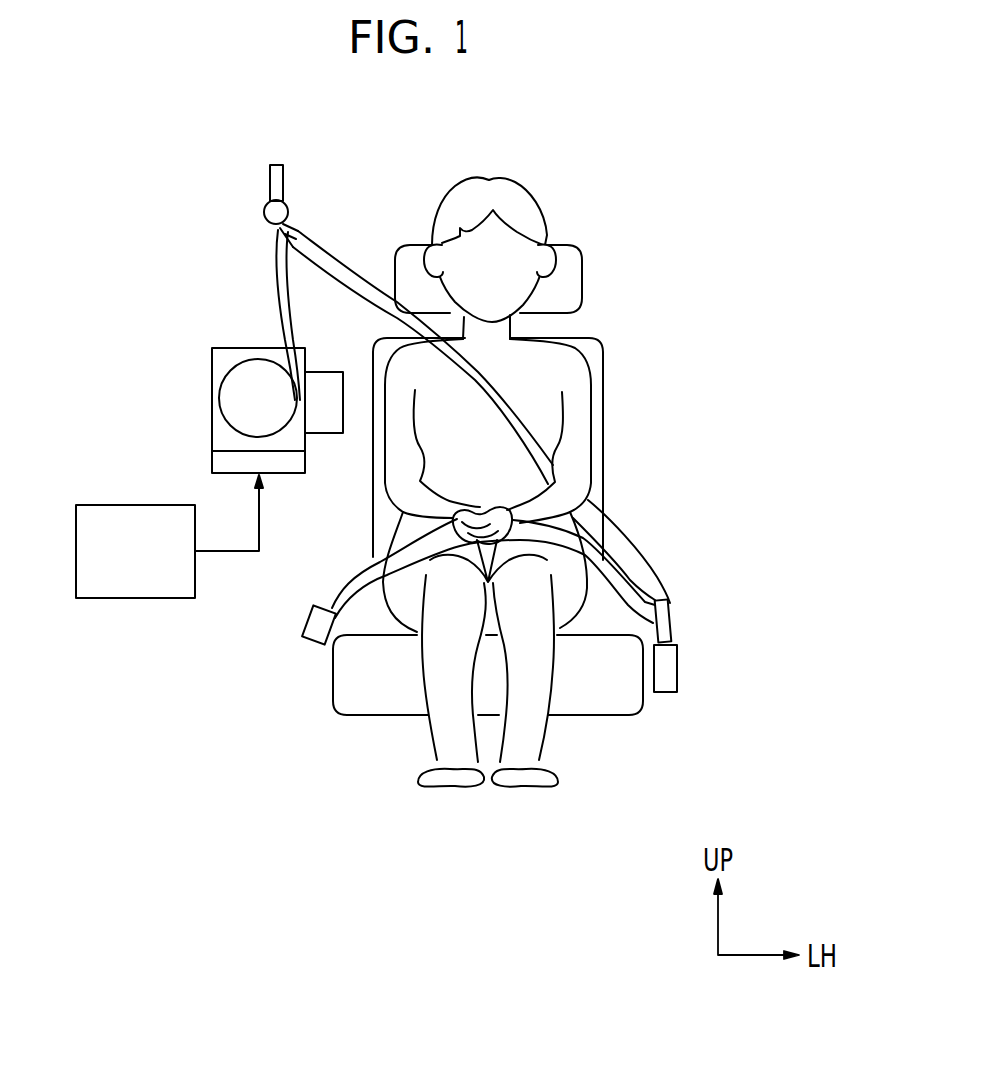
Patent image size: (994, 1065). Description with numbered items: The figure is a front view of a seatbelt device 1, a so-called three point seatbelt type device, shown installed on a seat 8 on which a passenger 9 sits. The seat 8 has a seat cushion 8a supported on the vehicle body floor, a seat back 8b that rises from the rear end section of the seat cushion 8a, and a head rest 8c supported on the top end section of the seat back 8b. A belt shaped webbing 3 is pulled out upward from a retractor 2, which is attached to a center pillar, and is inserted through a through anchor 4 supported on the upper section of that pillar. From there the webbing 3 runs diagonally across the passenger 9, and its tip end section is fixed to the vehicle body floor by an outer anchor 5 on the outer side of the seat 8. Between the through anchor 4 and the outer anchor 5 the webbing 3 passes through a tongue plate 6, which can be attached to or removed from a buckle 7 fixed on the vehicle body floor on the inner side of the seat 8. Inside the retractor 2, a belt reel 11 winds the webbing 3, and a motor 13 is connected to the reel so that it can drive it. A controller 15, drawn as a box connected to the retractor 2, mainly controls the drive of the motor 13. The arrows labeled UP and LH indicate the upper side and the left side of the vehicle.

The seatbelt device 1 is at (422, 425).
The retractor 2 is at (224, 412).
The webbing 3 is at (327, 240).
The through anchor 4 is at (287, 228).
The outer anchor 5 is at (318, 622).
The tongue plate 6 is at (668, 633).
The buckle 7 is at (667, 670).
The seat 8 is at (522, 528).
The seat cushion 8a is at (602, 695).
The seat back 8b is at (598, 442).
The head rest 8c is at (582, 273).
The passenger 9 is at (537, 192).
The belt reel 11 is at (240, 405).
The motor 13 is at (288, 463).
The controller 15 is at (125, 592).